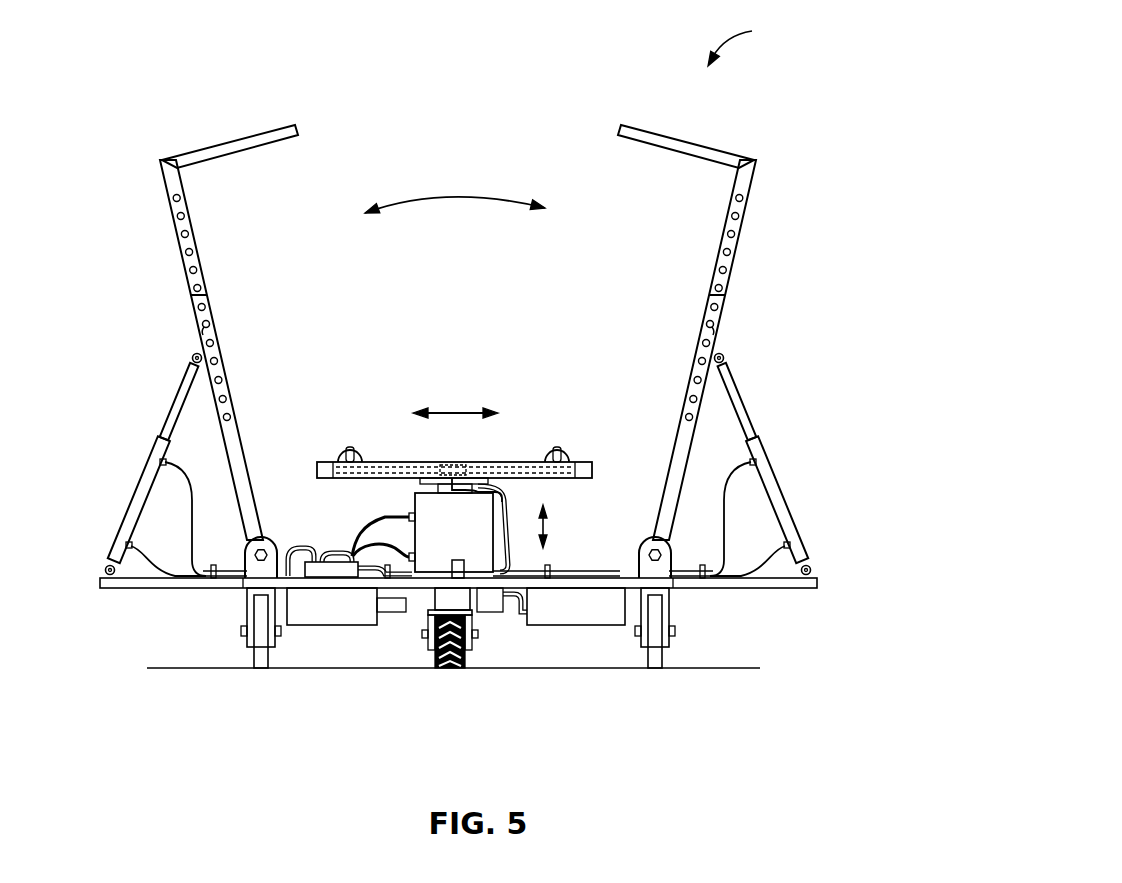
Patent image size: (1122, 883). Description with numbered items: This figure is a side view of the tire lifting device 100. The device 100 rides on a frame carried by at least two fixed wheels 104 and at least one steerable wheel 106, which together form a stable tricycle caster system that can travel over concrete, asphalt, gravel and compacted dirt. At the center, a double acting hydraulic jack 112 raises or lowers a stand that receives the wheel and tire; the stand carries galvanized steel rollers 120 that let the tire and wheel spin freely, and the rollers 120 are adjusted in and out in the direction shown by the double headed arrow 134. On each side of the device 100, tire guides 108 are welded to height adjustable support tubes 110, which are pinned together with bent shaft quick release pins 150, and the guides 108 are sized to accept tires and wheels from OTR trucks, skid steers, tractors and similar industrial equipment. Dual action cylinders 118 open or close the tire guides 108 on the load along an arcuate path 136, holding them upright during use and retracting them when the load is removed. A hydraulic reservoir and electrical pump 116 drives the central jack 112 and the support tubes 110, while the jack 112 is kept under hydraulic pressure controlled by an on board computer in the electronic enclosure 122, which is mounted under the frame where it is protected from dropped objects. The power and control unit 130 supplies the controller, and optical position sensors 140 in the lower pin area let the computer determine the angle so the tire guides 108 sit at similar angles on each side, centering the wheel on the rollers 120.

The device 100 is at (758, 44).
The fixed wheels 104 is at (655, 655).
The steerable wheel 106 is at (455, 668).
The tire guides 108 is at (702, 153).
The height adjustable support tubes 110 is at (738, 240).
The hydraulic jack 112 is at (427, 508).
The hydraulic reservoir and electrical pump 116 is at (320, 606).
The dual action cylinders 118 is at (773, 487).
The rollers 120 is at (556, 438).
The electronic enclosure 122 is at (555, 626).
The power and control unit 130 is at (245, 622).
The double headed arrow 134 is at (455, 410).
The arcuate path 136 is at (455, 196).
The optical position sensors 140 is at (577, 602).
The bent shaft quick release pins 150 is at (203, 332).